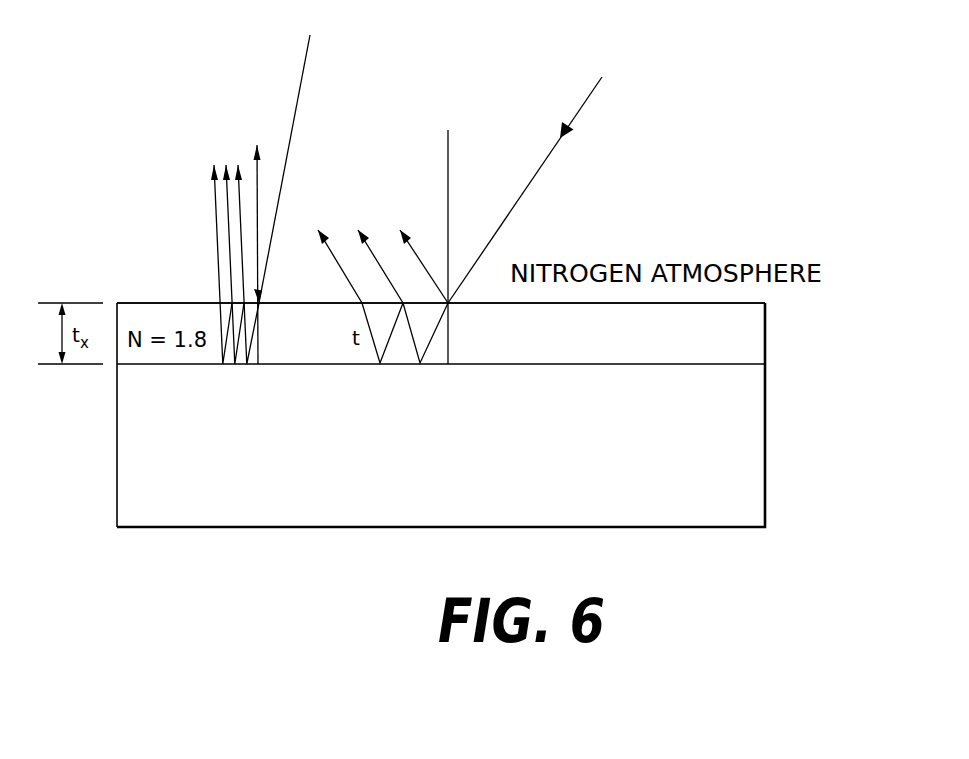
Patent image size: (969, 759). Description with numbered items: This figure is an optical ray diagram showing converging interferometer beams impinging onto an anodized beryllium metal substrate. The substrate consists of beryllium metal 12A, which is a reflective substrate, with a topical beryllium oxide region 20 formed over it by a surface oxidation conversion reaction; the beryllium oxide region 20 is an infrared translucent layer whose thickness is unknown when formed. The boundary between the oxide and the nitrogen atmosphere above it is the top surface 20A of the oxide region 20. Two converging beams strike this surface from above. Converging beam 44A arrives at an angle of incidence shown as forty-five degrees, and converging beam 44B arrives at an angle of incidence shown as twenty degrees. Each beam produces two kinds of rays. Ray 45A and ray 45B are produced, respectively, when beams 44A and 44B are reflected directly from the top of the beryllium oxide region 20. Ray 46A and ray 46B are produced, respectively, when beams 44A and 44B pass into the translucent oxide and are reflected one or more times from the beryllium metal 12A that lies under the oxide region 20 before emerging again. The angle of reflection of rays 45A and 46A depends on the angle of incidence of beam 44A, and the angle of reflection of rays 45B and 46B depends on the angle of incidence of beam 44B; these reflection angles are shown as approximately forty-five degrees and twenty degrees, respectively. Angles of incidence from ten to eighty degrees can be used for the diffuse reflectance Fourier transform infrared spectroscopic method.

The beryllium metal 12A is at (767, 438).
The beryllium oxide region 20 is at (767, 335).
The oxide region top surface 20A is at (732, 300).
The converging beam 44A is at (530, 183).
The ray 45A is at (407, 230).
The ray 46A is at (320, 228).
The converging beam 44B is at (298, 98).
The ray 45B is at (259, 192).
The ray 46B is at (240, 199).